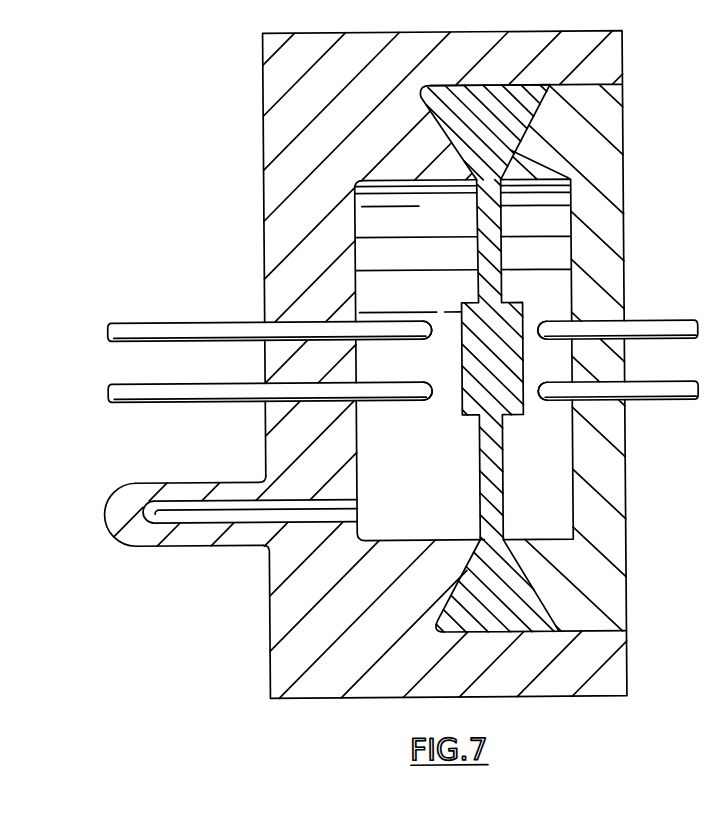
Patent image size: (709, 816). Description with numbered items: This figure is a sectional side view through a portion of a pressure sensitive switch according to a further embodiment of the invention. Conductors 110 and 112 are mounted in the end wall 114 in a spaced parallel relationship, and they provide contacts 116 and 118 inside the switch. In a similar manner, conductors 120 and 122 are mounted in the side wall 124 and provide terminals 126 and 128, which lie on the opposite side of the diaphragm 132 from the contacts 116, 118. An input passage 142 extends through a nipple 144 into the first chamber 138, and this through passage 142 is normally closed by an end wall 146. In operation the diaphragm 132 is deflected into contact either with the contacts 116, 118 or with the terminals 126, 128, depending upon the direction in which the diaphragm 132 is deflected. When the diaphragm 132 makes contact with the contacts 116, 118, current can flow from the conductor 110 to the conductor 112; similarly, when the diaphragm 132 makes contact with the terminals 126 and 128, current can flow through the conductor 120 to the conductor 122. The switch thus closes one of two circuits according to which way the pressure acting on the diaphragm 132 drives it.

The conductor 110 is at (213, 321).
The conductor 112 is at (213, 400).
The end wall 114 is at (284, 170).
The contact 116 is at (440, 317).
The contact 118 is at (433, 399).
The conductor 120 is at (671, 322).
The conductor 122 is at (674, 401).
The side wall 124 is at (613, 146).
The terminal 126 is at (541, 321).
The terminal 128 is at (539, 401).
The diaphragm 132 is at (488, 216).
The first chamber 138 is at (411, 491).
The input passage 142 is at (164, 521).
The nipple 144 is at (232, 534).
The end wall 146 is at (121, 518).